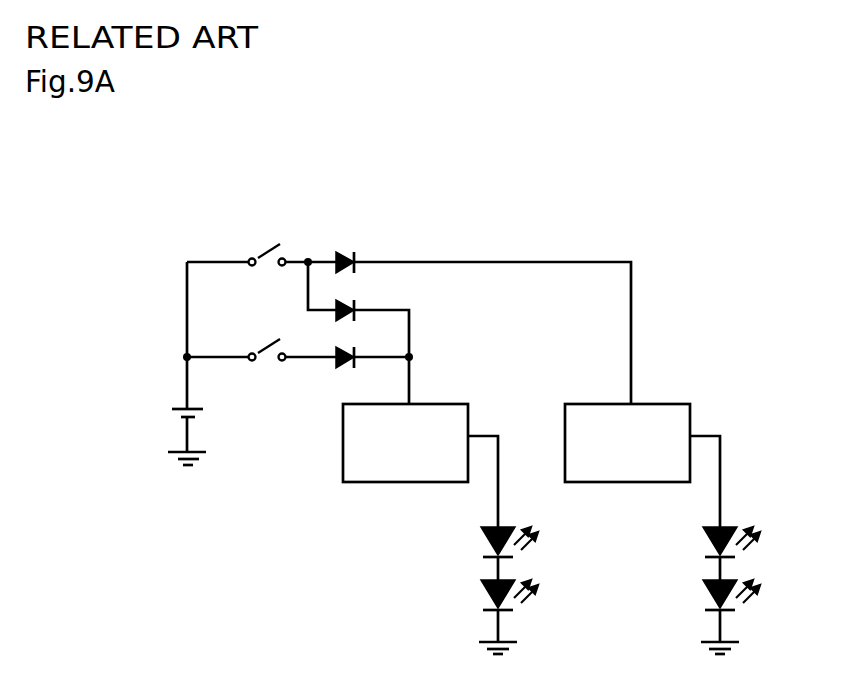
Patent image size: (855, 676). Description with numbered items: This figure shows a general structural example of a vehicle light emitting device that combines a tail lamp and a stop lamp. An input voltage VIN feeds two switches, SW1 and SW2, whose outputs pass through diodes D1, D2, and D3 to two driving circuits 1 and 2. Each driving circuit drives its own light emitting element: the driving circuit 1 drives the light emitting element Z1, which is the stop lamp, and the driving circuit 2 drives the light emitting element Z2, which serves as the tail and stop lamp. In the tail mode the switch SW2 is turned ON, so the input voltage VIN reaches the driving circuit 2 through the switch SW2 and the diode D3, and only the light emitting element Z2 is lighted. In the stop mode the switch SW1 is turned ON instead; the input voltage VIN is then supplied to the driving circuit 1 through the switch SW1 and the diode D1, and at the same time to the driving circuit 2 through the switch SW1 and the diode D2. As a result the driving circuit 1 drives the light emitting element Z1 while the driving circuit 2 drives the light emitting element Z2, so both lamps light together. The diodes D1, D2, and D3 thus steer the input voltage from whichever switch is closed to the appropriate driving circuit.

The driving circuit 1 is at (675, 400).
The driving circuit 2 is at (453, 403).
The switch SW1 is at (266, 242).
The switch SW2 is at (266, 337).
The diode D1 is at (347, 250).
The diode D2 is at (347, 298).
The diode D3 is at (347, 345).
The light emitting element Z1 is at (757, 507).
The light emitting element Z2 is at (535, 507).
The input voltage VIN is at (177, 424).